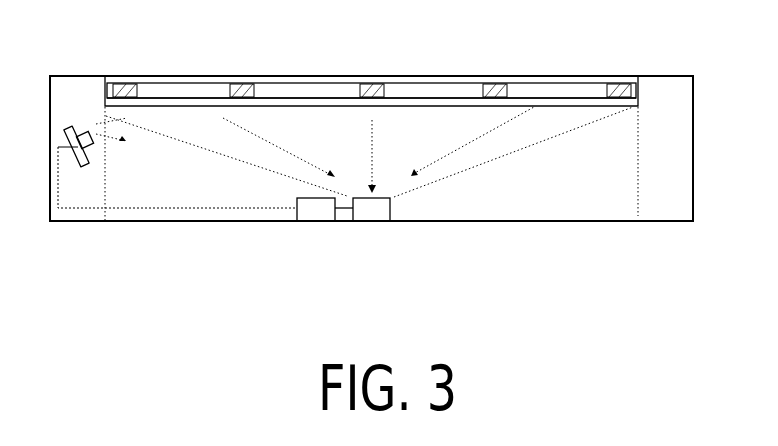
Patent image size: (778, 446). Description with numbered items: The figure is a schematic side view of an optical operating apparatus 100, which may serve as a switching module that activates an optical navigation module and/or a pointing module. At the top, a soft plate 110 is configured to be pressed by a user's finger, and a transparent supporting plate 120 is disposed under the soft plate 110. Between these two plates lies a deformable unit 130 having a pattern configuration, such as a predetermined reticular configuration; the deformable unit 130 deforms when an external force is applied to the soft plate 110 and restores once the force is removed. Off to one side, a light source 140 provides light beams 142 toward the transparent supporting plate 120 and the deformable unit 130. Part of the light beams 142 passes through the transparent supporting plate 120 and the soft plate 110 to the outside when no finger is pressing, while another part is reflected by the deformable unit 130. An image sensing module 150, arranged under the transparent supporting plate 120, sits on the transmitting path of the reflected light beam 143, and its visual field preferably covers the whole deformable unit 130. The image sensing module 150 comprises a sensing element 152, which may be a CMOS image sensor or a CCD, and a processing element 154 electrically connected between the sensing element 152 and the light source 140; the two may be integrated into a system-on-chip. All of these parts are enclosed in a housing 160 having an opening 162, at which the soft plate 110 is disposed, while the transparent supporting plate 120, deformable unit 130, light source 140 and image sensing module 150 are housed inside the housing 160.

The optical operating apparatus 100 is at (620, 282).
The soft plate 110 is at (298, 81).
The transparent supporting plate 120 is at (638, 100).
The deformable unit 130 is at (507, 90).
The light source 140 is at (66, 125).
The light beams 142 is at (115, 142).
The light beam reflected by the deformable unit 143 is at (374, 137).
The image sensing module 150 is at (400, 276).
The sensing element 152 is at (376, 222).
The processing element 154 is at (312, 222).
The housing 160 is at (694, 187).
The opening 162 is at (640, 68).